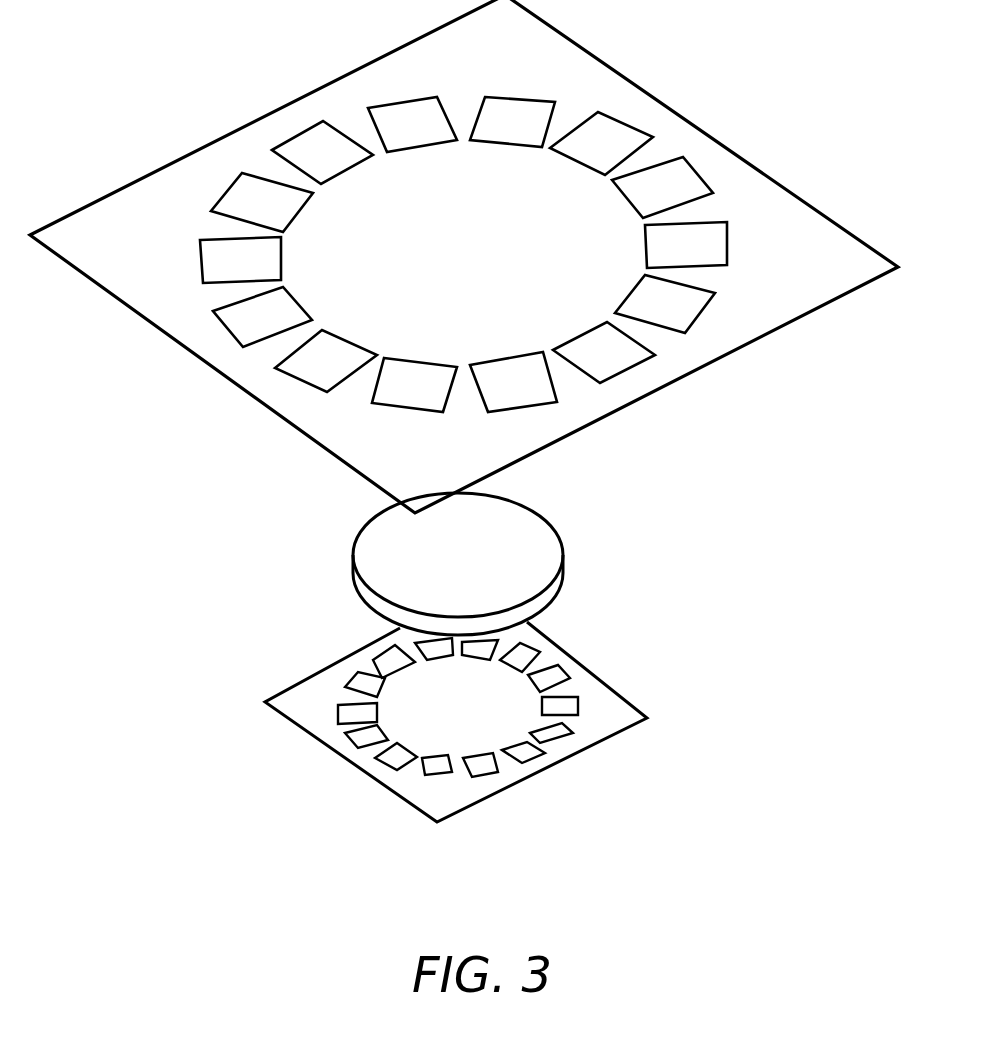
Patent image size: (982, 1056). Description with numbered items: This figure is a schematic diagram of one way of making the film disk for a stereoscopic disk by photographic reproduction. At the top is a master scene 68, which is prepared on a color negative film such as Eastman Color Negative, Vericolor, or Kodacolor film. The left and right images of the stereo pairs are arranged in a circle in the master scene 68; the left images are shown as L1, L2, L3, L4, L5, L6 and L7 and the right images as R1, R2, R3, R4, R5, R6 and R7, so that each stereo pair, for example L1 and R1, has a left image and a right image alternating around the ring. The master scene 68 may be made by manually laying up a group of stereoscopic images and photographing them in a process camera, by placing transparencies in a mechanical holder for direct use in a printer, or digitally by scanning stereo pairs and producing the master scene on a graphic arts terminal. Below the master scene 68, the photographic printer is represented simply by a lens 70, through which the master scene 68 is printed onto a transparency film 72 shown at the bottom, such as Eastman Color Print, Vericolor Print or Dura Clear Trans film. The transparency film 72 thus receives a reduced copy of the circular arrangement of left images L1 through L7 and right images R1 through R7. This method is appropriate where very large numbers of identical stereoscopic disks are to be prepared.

The master scene 68 is at (782, 192).
The lens 70 is at (563, 542).
The transparency film 72 is at (642, 707).
The right image R1 is at (527, 753).
The right image R2 is at (619, 715).
The right image R3 is at (530, 652).
The right image R4 is at (440, 660).
The right image R5 is at (345, 680).
The right image R6 is at (345, 740).
The right image R7 is at (430, 775).
The left image L1 is at (380, 657).
The left image L2 is at (306, 721).
The left image L3 is at (388, 760).
The left image L4 is at (492, 777).
The left image L5 is at (583, 750).
The left image L6 is at (562, 682).
The left image L7 is at (477, 660).